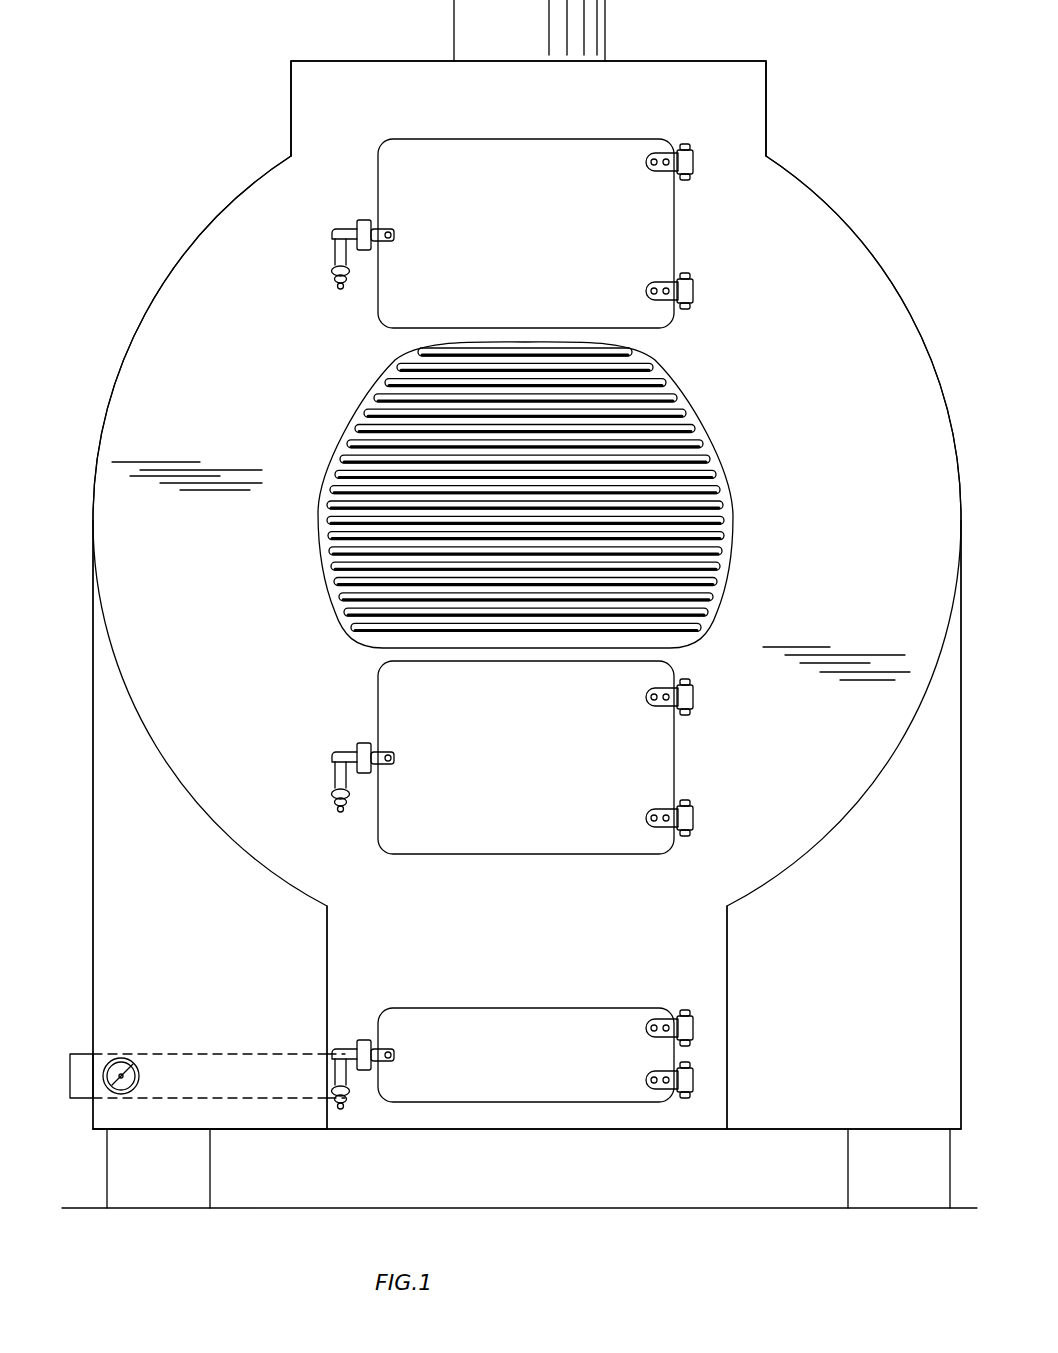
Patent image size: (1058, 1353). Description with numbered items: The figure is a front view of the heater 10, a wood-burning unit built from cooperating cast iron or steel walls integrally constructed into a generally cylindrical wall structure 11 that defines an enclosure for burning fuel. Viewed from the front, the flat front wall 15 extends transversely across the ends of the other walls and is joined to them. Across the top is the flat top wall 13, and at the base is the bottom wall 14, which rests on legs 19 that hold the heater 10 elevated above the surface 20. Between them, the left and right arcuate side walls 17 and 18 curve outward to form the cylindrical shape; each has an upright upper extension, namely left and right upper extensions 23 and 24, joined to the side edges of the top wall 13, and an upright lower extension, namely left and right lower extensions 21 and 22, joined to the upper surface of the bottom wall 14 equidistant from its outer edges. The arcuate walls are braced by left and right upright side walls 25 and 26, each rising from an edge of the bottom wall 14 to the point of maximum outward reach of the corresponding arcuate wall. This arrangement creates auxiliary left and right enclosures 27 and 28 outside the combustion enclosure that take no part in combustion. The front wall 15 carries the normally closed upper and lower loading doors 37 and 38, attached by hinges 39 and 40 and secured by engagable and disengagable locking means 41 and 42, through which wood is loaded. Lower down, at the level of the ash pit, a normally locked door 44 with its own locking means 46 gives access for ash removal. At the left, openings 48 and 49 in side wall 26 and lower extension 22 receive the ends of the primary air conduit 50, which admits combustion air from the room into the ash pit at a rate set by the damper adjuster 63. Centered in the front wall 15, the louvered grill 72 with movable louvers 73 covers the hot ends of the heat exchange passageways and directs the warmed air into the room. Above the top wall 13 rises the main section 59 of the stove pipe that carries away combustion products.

The heater 10 is at (162, 262).
The cylindrical wall structure 11 is at (940, 372).
The top wall 13 is at (681, 60).
The bottom wall 14 is at (552, 1129).
The front wall 15 is at (175, 600).
The left arcuate side wall 17 is at (943, 395).
The right arcuate side wall 18 is at (118, 378).
The legs 19 is at (138, 1177).
The surface 20 is at (322, 1208).
The left lower extension 21 is at (729, 932).
The right lower extension 22 is at (327, 932).
The left upper extension 23 is at (766, 126).
The right upper extension 24 is at (291, 118).
The left upright side wall 25 is at (962, 884).
The right upright side wall 26 is at (93, 893).
The left auxiliary enclosure 27 is at (820, 1000).
The right auxiliary enclosure 28 is at (130, 1015).
The upper loading door 37 is at (493, 250).
The lower loading door 38 is at (486, 758).
The upper door hinge 39 is at (692, 288).
The lower door hinge 40 is at (692, 818).
The upper door locking means 41 is at (360, 222).
The lower door locking means 42 is at (357, 745).
The ash pit door 44 is at (496, 1068).
The ash pit door locking means 46 is at (360, 1041).
The side wall opening 48 is at (93, 1054).
The lower extension opening 49 is at (306, 1062).
The primary air conduit 50 is at (203, 1054).
The main stove pipe section 59 is at (472, 25).
The damper adjuster 63 is at (134, 1087).
The louvered grill 72 is at (712, 452).
The movable louvers 73 is at (700, 556).